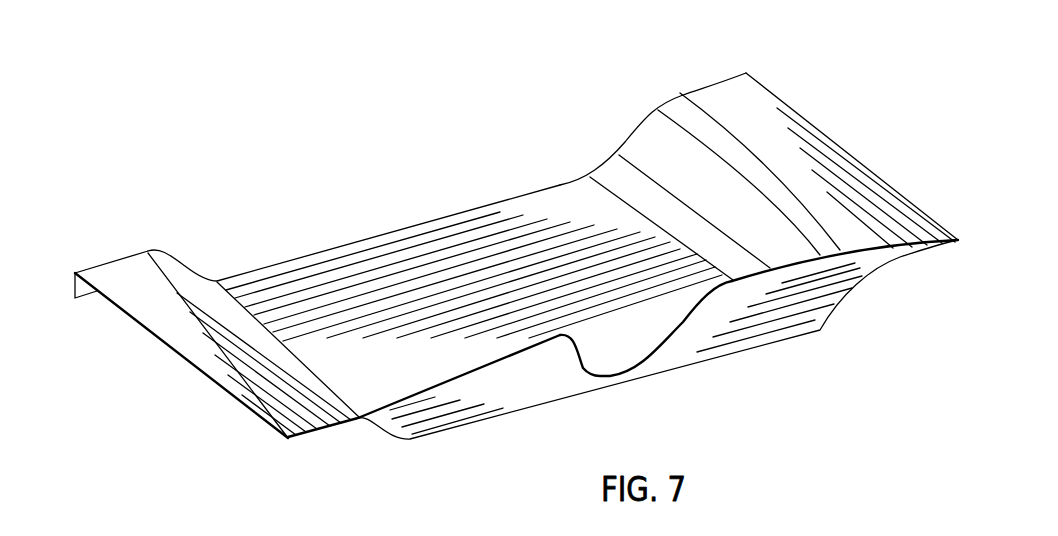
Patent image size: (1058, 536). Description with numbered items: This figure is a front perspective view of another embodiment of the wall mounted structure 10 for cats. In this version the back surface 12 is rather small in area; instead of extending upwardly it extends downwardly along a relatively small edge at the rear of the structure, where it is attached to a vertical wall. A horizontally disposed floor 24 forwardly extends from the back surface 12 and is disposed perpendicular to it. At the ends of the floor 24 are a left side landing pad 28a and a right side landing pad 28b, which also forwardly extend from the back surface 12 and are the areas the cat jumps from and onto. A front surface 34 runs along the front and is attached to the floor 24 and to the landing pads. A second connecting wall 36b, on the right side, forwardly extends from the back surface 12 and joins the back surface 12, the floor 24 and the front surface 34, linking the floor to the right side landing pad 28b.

The wall mounted structure 10 is at (317, 130).
The back surface 12 is at (78, 302).
The floor 24 is at (492, 257).
The left side landing pad 28a is at (173, 333).
The right side landing pad 28b is at (762, 115).
The front surface 34 is at (750, 307).
The second connecting wall 36b is at (650, 148).